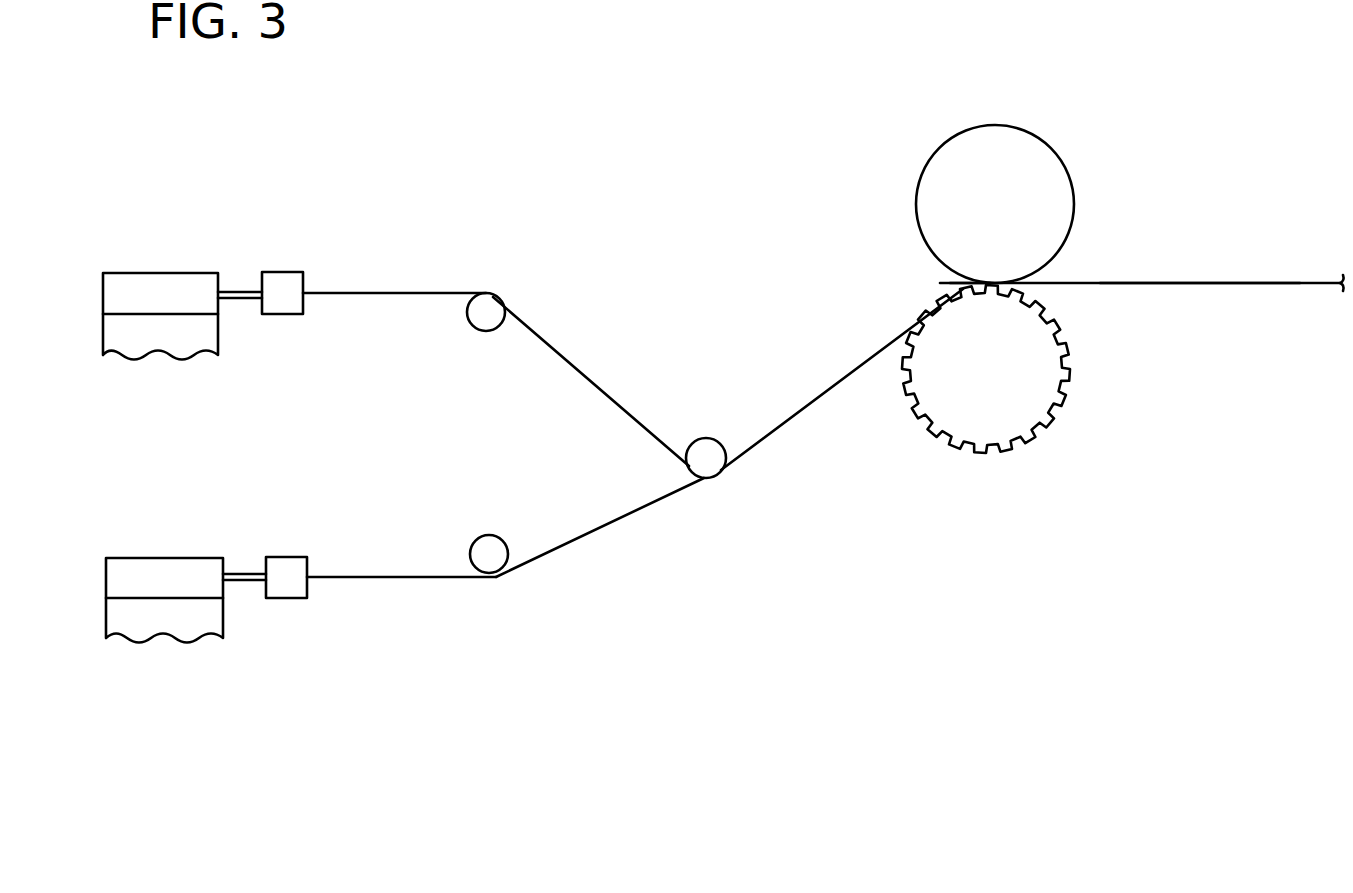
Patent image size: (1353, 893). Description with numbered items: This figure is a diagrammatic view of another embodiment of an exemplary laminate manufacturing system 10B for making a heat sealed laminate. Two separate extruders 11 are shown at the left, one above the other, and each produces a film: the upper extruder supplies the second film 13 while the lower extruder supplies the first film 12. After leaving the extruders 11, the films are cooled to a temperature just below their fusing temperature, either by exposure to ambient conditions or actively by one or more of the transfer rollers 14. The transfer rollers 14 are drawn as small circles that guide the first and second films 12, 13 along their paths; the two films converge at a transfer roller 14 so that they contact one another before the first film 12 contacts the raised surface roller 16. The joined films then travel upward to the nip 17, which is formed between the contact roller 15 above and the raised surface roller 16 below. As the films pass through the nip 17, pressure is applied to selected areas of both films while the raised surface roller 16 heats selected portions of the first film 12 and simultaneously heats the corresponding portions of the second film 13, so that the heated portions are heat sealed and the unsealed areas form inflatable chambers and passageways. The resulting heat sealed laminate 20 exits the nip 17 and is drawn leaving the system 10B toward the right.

The laminate manufacturing system 10B is at (596, 185).
The extruder 11 is at (160, 248).
The first film 12 is at (361, 576).
The second film 13 is at (363, 291).
The transfer roller 14 is at (487, 306).
The contact roller 15 is at (1053, 172).
The raised surface roller 16 is at (933, 413).
The nip 17 is at (938, 282).
The heat sealed laminate 20 is at (1187, 303).